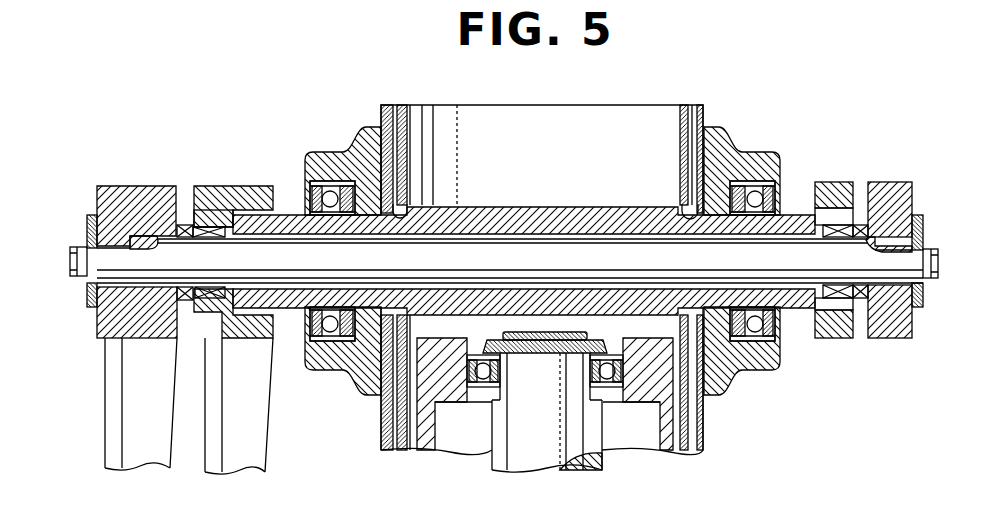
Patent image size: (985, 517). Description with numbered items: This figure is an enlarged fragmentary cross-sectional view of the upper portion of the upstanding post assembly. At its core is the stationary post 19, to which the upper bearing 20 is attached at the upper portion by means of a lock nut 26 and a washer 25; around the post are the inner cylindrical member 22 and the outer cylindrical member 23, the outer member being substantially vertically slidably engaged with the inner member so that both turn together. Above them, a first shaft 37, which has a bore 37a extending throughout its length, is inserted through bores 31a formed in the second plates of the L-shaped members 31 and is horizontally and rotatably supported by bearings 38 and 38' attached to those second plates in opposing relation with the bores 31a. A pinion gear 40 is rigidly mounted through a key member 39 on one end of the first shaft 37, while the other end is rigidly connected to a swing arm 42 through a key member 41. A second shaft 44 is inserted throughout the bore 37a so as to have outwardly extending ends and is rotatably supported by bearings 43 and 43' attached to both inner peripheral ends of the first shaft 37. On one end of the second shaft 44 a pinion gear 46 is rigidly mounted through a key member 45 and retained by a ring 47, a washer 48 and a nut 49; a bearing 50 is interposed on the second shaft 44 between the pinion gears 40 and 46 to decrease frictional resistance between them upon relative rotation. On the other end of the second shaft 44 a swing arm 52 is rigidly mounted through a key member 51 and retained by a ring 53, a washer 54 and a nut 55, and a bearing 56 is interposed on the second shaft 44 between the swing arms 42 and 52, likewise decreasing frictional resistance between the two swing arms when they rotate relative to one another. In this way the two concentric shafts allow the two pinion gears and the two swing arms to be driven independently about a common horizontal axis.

The stationary post 19 is at (532, 460).
The upper bearing 20 is at (483, 388).
The inner cylindrical member 22 is at (422, 450).
The outer cylindrical member 23 is at (401, 106).
The washer 25 is at (497, 341).
The lock nut 26 is at (600, 339).
The L-shaped members 31 is at (389, 106).
The bores 31a is at (397, 212).
The first shaft 37 is at (548, 207).
The bore 37a is at (530, 243).
The bearing 38 is at (343, 253).
The bearing 38' is at (742, 253).
The key member 39 is at (848, 212).
The pinion gear 40 is at (823, 182).
The key member 41 is at (196, 210).
The swing arm 42 is at (258, 186).
The bearing 43 is at (222, 296).
The bearing 43' is at (833, 301).
The second shaft 44 is at (487, 247).
The key member 45 is at (902, 246).
The pinion gear 46 is at (900, 182).
The ring 47 is at (923, 298).
The washer 48 is at (923, 240).
The nut 49 is at (938, 262).
The bearing 50 is at (862, 298).
The key member 51 is at (110, 236).
The swing arm 52 is at (142, 186).
The ring 53 is at (87, 230).
The washer 54 is at (84, 281).
The nut 55 is at (70, 261).
The bearing 56 is at (176, 292).